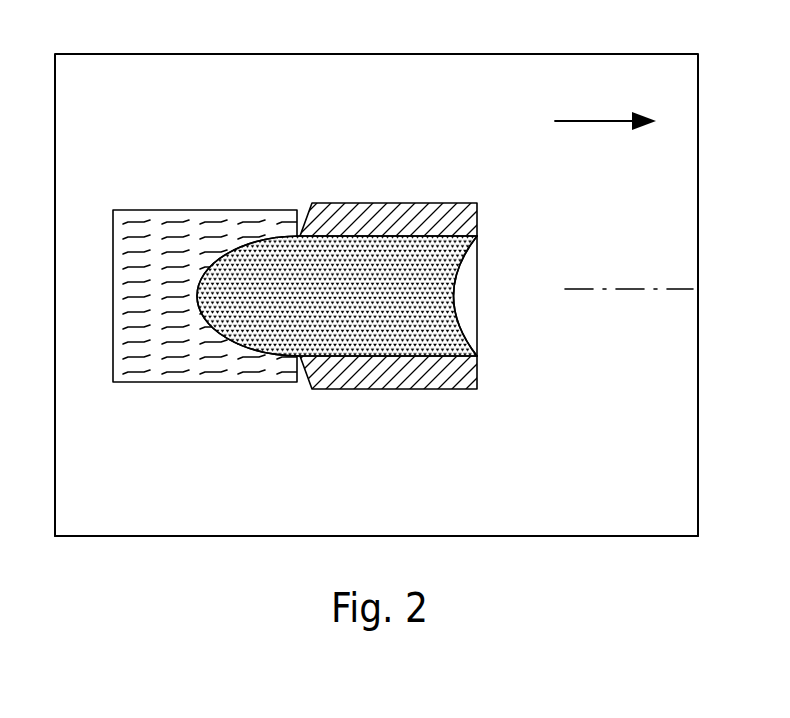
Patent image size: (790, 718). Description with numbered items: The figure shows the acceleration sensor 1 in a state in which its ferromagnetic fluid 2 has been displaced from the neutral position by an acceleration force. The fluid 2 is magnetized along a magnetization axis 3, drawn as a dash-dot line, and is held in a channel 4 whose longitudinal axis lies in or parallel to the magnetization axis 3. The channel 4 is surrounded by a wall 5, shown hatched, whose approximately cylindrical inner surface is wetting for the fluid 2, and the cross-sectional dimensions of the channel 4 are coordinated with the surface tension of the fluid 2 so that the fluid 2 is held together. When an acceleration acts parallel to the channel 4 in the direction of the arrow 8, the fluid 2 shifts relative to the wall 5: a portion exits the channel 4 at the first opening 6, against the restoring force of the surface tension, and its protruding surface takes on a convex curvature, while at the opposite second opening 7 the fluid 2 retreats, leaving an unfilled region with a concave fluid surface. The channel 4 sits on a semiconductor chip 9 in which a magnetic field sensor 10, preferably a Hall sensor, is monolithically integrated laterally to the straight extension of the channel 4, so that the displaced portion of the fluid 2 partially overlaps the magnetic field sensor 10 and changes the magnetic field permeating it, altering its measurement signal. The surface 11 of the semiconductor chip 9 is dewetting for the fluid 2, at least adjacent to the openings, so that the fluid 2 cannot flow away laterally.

The acceleration sensor 1 is at (614, 579).
The ferromagnetic fluid 2 is at (440, 295).
The magnetization axis 3 is at (630, 300).
The channel 4 is at (394, 347).
The wall 5 is at (383, 215).
The first opening 6 is at (243, 374).
The second opening 7 is at (499, 255).
The arrow 8 is at (605, 101).
The semiconductor chip 9 is at (137, 515).
The magnetic field sensor 10 is at (195, 235).
The surface 11 is at (643, 497).